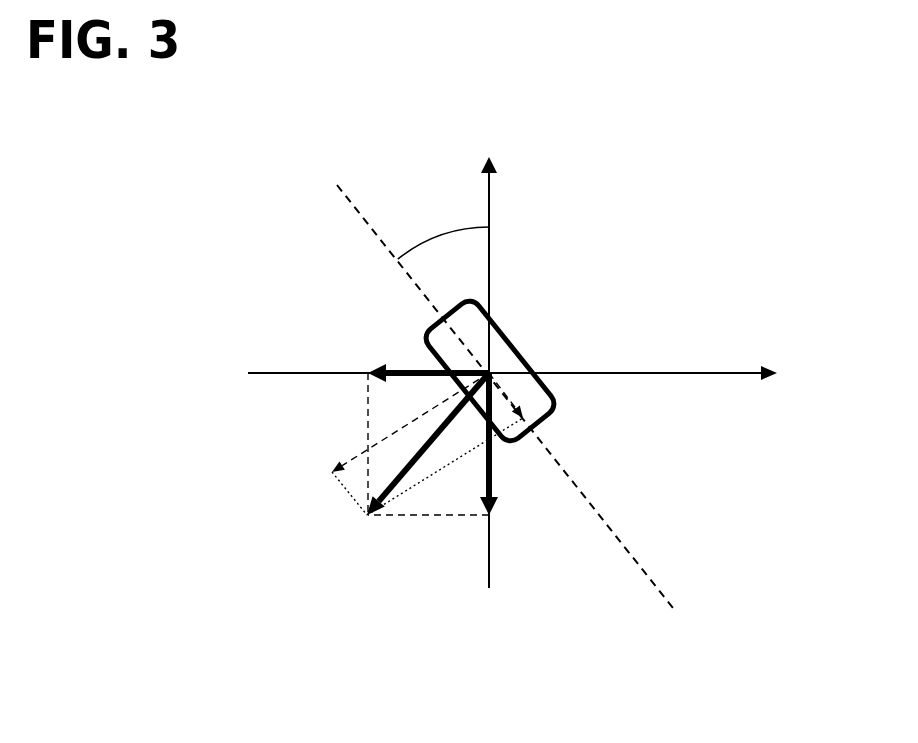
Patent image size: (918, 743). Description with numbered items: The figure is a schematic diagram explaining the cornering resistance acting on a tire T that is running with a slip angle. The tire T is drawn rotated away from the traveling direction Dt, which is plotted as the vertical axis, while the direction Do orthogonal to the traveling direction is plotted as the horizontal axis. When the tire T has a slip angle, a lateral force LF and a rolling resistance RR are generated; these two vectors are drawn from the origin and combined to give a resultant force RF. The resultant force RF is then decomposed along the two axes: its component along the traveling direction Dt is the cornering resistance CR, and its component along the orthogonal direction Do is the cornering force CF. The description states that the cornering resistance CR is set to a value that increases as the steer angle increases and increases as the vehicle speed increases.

The tire T is at (522, 348).
The traveling direction Dt is at (488, 359).
The direction orthogonal to the traveling direction Do is at (531, 374).
The cornering force CF is at (407, 428).
The cornering resistance CR is at (447, 459).
The resultant force RF is at (434, 466).
The lateral force LF is at (393, 444).
The rolling resistance RR is at (538, 414).